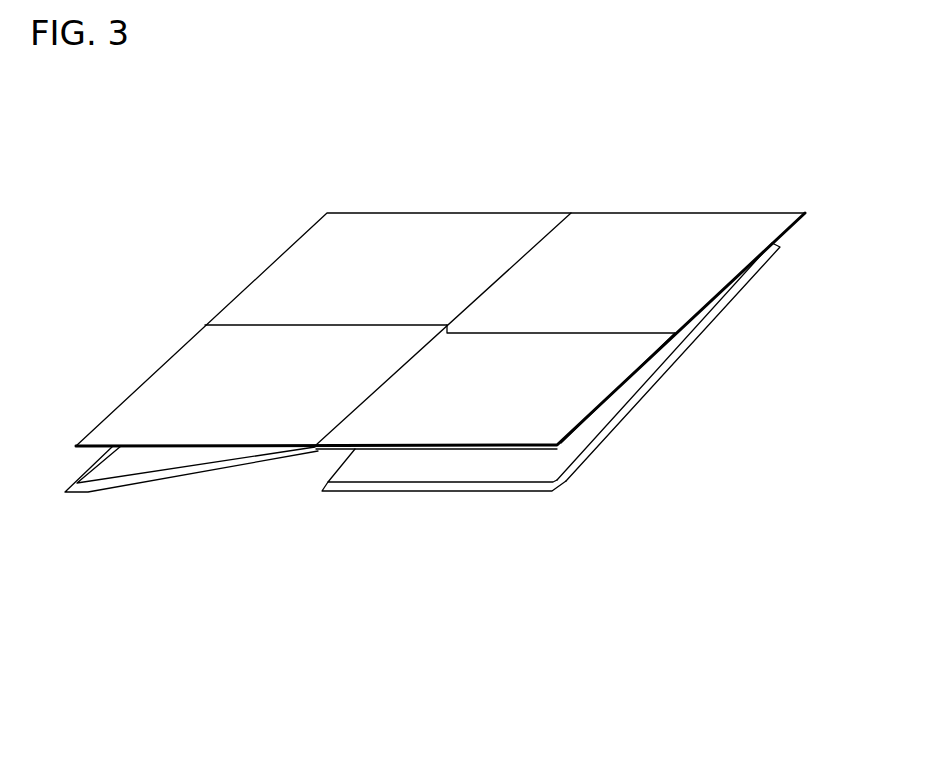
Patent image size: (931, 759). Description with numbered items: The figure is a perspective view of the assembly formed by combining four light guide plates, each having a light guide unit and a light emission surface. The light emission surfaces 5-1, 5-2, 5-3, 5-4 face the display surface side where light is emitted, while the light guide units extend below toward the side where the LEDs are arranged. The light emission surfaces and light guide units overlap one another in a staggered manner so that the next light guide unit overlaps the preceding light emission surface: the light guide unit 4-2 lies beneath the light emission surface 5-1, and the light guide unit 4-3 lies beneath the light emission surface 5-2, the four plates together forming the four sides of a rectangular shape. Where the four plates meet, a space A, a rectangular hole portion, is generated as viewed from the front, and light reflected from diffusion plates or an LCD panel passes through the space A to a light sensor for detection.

The light emission surface 5-1 is at (167, 387).
The light emission surface 5-2 is at (597, 383).
The light emission surface 5-3 is at (687, 230).
The light emission surface 5-4 is at (287, 280).
The light guide unit 4-2 is at (228, 455).
The light guide unit 4-3 is at (748, 280).
The space A is at (447, 325).